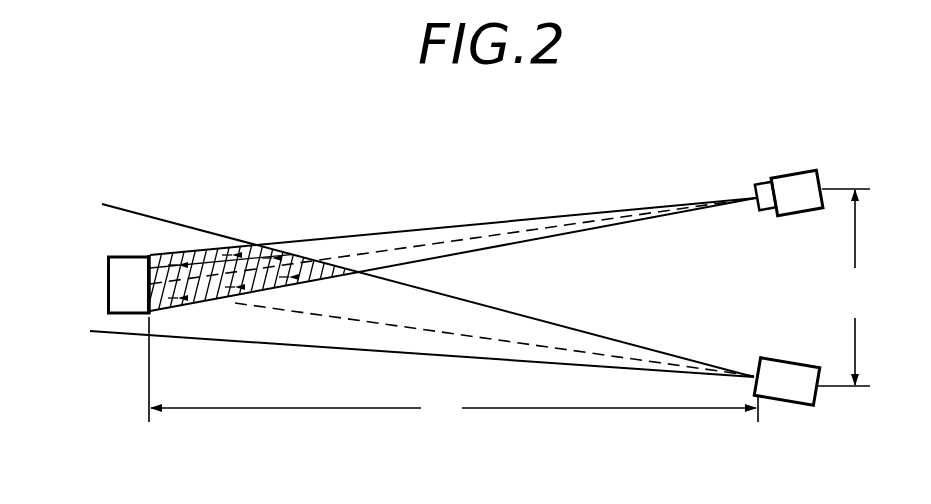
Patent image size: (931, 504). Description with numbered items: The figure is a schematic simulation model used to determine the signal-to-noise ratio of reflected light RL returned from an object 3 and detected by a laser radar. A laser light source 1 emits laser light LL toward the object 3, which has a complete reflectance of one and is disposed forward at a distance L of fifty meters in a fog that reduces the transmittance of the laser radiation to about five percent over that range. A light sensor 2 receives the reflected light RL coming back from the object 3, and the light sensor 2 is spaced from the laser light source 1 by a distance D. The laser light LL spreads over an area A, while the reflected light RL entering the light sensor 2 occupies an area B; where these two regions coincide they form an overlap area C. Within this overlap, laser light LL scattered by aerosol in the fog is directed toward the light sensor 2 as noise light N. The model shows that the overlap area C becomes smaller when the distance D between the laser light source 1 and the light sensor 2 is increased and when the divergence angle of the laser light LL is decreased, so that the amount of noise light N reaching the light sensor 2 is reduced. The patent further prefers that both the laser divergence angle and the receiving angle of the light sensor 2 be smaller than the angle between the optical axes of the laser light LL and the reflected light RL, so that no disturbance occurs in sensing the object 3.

The laser light source 1 is at (793, 398).
The light sensor 2 is at (797, 170).
The object 3 is at (128, 263).
The reflected light RL is at (533, 218).
The laser light LL is at (547, 322).
The area of the laser radiation A is at (494, 339).
The area of the reflected light B is at (453, 241).
The overlap area C is at (266, 280).
The noise light N is at (183, 298).
The distance from the laser light source to the light sensor D is at (844, 287).
The distance to the object L is at (453, 370).